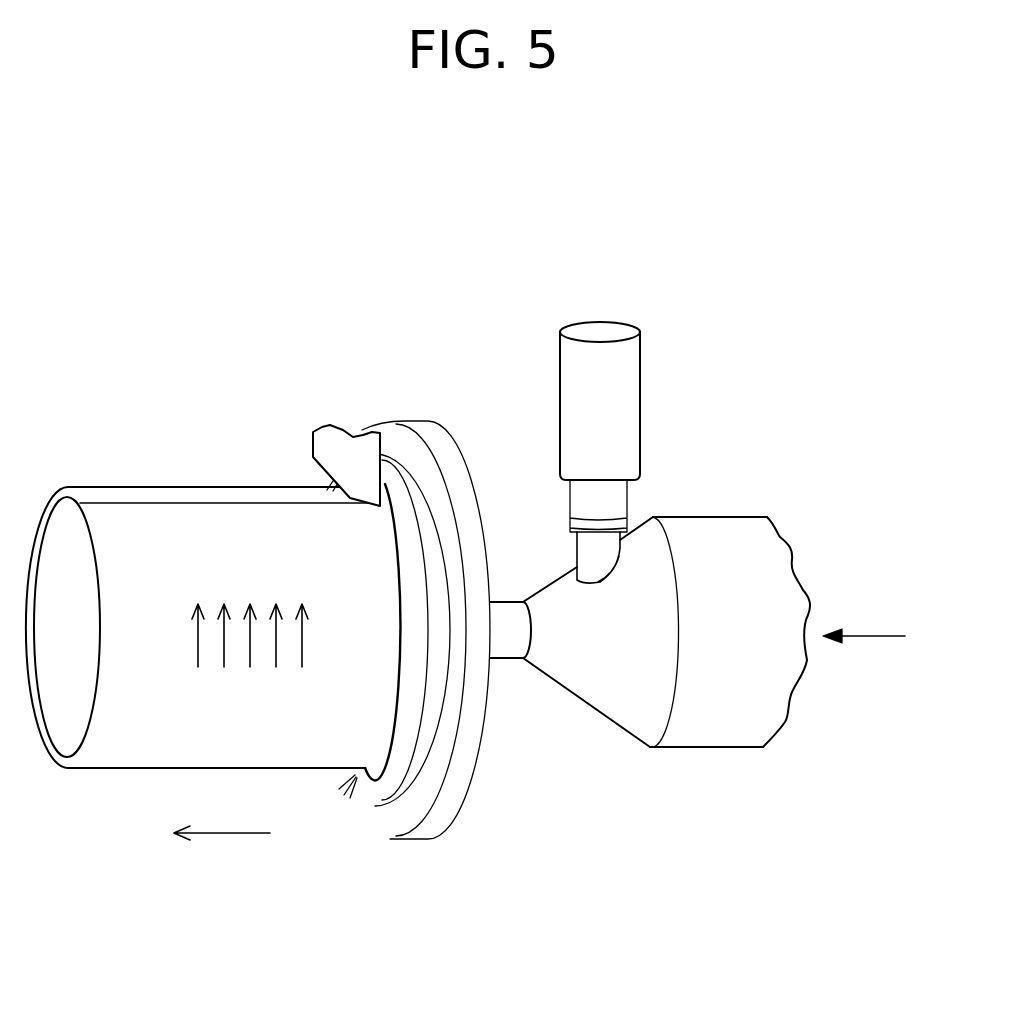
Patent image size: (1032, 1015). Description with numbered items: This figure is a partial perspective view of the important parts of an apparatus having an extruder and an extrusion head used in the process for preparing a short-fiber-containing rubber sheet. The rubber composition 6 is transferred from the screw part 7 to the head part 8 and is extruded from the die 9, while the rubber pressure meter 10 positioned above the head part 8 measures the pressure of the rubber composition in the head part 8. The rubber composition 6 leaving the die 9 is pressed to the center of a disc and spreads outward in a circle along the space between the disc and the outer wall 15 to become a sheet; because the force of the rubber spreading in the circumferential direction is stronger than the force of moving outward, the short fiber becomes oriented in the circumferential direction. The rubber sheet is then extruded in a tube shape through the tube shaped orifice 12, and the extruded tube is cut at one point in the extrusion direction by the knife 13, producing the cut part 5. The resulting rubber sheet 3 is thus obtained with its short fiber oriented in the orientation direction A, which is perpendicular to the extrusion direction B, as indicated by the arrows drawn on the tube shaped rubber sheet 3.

The rubber sheet 3 is at (133, 522).
The cut part 5 is at (200, 503).
The knife 13 is at (338, 440).
The rubber pressure meter 10 is at (622, 420).
The rubber composition 6 is at (875, 636).
The die 9 is at (510, 643).
The head part 8 is at (613, 693).
The screw part 7 is at (727, 708).
The tube shaped orifice 12 is at (353, 777).
The outer wall 15 is at (357, 780).
The orientation direction A is at (198, 657).
The extrusion direction B is at (225, 835).